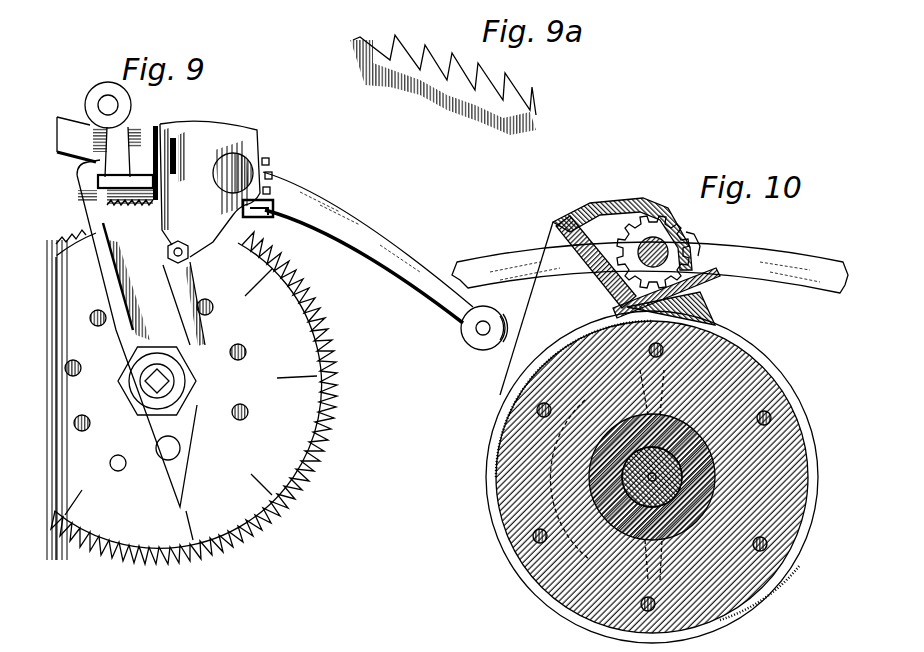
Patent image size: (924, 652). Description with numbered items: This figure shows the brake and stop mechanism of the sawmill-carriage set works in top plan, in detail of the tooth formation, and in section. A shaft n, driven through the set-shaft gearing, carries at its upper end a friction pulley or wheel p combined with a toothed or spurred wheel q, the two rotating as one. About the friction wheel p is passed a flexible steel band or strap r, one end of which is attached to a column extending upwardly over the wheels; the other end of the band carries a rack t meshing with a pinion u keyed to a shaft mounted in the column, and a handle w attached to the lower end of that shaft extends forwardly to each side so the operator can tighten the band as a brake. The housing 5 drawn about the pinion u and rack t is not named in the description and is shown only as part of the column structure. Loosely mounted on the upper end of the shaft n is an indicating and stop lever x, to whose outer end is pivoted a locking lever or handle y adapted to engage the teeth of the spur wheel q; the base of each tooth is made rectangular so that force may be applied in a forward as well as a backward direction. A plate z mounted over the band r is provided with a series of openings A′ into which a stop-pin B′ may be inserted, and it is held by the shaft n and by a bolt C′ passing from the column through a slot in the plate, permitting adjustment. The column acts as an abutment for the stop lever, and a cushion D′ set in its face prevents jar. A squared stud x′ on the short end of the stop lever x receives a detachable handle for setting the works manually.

In FIG. 9, the toothed or spurred wheel q is at (328, 327).
In FIG. 9A, the toothed or spurred wheel q is at (443, 89).
In FIG. 9, the plate z is at (191, 404).
In FIG. 9, the indicating and stop lever x is at (84, 205).
In FIG. 9, the locking lever or handle y is at (118, 133).
In FIG. 9, the openings A′ is at (81, 369).
In FIG. 9, the squared or polygonal stud or projection x′ is at (180, 450).
In FIG. 9, the stop-pin B′ is at (117, 471).
In FIG. 9, the pawl housing 5 is at (250, 130).
In FIG. 10, the pawl housing 5 is at (640, 204).
In FIG. 9, the cushion D′ is at (163, 150).
In FIG. 10, the cushion D′ is at (592, 262).
In FIG. 9, the flexible steel band or strap r is at (222, 166).
In FIG. 10, the flexible steel band or strap r is at (638, 254).
In FIG. 9, the pinion u is at (272, 161).
In FIG. 10, the pinion u is at (684, 238).
In FIG. 9, the rack t is at (270, 220).
In FIG. 10, the rack t is at (712, 268).
In FIG. 9, the bolt C′ is at (186, 264).
In FIG. 9, the handle w is at (468, 333).
In FIG. 10, the handle w is at (650, 267).
In FIG. 10, the friction pulley or wheel p is at (782, 412).
In FIG. 10, the shaft n is at (666, 488).